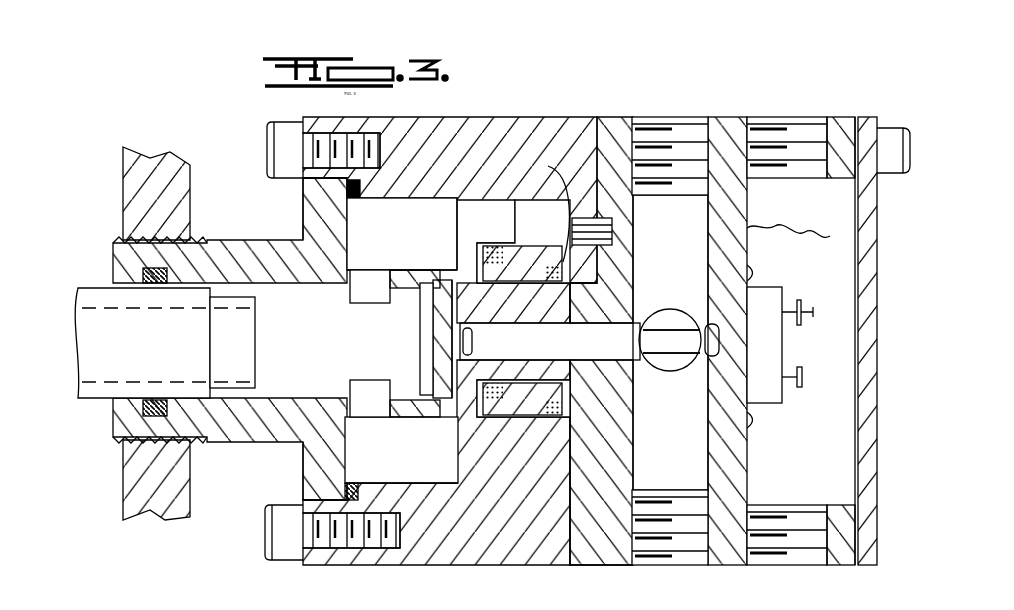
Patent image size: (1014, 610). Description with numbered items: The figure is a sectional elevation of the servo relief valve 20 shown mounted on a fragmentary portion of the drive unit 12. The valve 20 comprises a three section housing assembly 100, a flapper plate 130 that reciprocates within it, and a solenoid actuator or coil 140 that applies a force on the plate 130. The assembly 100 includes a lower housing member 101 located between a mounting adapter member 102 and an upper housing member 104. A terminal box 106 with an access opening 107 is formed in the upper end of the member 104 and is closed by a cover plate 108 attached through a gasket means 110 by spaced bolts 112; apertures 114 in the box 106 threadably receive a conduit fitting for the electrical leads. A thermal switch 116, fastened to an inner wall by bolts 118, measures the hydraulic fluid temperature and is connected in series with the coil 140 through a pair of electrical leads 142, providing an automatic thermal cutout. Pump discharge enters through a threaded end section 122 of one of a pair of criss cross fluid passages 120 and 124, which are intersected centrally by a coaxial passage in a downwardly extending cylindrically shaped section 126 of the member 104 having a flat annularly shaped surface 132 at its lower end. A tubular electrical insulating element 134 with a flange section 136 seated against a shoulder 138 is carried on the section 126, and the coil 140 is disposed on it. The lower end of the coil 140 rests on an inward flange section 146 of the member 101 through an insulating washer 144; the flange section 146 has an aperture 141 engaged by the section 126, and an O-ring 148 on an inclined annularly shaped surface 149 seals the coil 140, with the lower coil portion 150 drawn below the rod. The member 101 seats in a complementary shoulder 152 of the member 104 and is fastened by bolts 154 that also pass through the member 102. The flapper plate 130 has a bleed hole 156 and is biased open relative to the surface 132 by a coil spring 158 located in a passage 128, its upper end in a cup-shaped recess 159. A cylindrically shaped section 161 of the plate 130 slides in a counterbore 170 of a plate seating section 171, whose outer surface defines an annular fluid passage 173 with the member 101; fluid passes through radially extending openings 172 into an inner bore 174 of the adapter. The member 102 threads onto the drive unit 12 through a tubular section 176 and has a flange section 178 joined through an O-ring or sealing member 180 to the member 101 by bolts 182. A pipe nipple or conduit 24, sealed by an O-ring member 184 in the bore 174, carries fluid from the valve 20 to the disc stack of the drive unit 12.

The drive unit 12 is at (147, 166).
The servo relief valve 20 is at (436, 485).
The pipe nipple or conduit 24 is at (90, 365).
The housing assembly 100 is at (450, 166).
The lower housing member 101 is at (425, 567).
The mounting adapter member 102 is at (283, 444).
The upper housing member 104 is at (728, 113).
The terminal box 106 is at (793, 212).
The access opening 107 is at (852, 363).
The cover plate 108 is at (880, 286).
The gasket means 110 is at (853, 553).
The bolts, screws, or the like 112 is at (888, 128).
The apertures 114 is at (817, 130).
The thermal switch 116 is at (800, 374).
The bolts, screws, or the like 118 is at (756, 273).
The fluid passage 120 is at (700, 421).
The threaded end section 122 is at (633, 135).
The fluid passage 124 is at (667, 310).
The cylindrically shaped section 126 is at (603, 341).
The passage 128 is at (580, 341).
The flapper plate 130 is at (431, 366).
The flat annularly shaped surface 132 is at (489, 339).
The tubular electrical insulating element 134 is at (578, 323).
The flange section 136 is at (585, 267).
The shoulder 138 is at (580, 397).
The solenoid actuator or coil 140 is at (497, 266).
The aperture 141 is at (421, 361).
The electrical leads 142 is at (800, 236).
The insulating washer 144 is at (491, 226).
The flange section 146 is at (457, 232).
The O-ring 148 is at (513, 322).
The inclined annularly shaped surface 149 is at (457, 250).
The lower spring 150 is at (487, 392).
The complementary shoulder 152 is at (590, 520).
The bolts, screws, or the like 154 is at (273, 534).
The bleed hole 156 is at (431, 338).
The coil spring 158 is at (705, 341).
The cup-shaped recess 159 is at (763, 345).
The cylindrically shaped section 161 is at (433, 305).
The counterbore 170 is at (401, 450).
The plate seating section 171 is at (413, 268).
The radially extending openings 172 is at (370, 305).
The annular shaped fluid passage 173 is at (375, 476).
The inner bore 174 is at (298, 287).
The tubular section 176 is at (234, 241).
The flange section 178 is at (345, 186).
The O-ring or sealing member 180 is at (482, 120).
The bolts, screws, or the like 182 is at (267, 128).
The O-ring member 184 is at (152, 287).